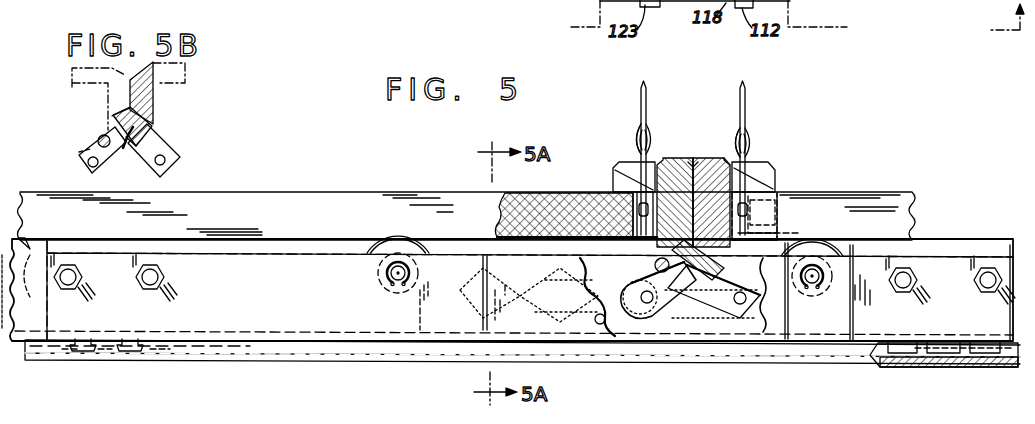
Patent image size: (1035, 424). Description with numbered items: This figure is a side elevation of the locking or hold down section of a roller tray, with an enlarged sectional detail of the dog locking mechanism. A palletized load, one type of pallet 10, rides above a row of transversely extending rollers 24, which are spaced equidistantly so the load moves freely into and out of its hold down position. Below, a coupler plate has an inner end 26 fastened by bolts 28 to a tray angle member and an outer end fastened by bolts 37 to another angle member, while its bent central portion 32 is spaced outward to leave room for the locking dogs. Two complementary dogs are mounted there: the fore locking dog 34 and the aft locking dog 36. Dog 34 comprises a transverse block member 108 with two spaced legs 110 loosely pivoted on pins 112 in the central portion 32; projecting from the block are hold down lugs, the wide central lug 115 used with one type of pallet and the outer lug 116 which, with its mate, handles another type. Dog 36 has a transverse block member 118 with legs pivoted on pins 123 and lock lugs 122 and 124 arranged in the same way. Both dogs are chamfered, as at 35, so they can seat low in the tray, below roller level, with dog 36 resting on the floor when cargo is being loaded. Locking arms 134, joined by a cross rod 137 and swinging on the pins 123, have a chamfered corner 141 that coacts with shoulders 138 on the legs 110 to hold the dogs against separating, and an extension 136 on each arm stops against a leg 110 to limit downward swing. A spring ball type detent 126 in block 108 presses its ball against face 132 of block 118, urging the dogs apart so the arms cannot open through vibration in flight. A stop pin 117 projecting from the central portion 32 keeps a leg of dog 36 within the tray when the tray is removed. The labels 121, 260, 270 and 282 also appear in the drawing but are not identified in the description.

In FIG. 5, the pallet 10 is at (303, 189).
In FIG. 5, the roller 24 is at (30, 244).
In FIG. 5, the inner end 26 is at (278, 322).
In FIG. 5, the bolt 28 is at (137, 281).
In FIG. 5, the central portion 32 is at (521, 262).
In FIG. 5, the locking dog 34 is at (668, 152).
In FIG. 5, the chamfer 35 is at (700, 163).
In FIG. 5, the locking dog 36 is at (729, 150).
In FIG. 5, the bolt 37 is at (915, 268).
In FIG. 5, the transverse block member 108 is at (622, 172).
In FIG. 5B, the leg 110 is at (164, 142).
In FIG. 5, the leg 110 is at (735, 311).
In FIG. 5B, the pin 112 is at (177, 157).
In FIG. 5, the pin 112 is at (745, 305).
In FIG. 5, the hold down lug 115 is at (635, 166).
In FIG. 5B, the hold down lug 116 is at (72, 84).
In FIG. 5, the stop pin 117 is at (600, 325).
In FIG. 5, the transverse block member 118 is at (746, 190).
In FIG. 5B, the base edge 121 is at (80, 149).
In FIG. 5, the base edge 121 is at (582, 247).
In FIG. 5, the lock lug 122 is at (760, 167).
In FIG. 5B, the pin 123 is at (80, 162).
In FIG. 5, the pin 123 is at (652, 304).
In FIG. 5B, the lock lug 124 is at (185, 68).
In FIG. 5, the spring ball type detent 126 is at (749, 222).
In FIG. 5, the face 132 is at (742, 233).
In FIG. 5B, the locking arm 134 is at (104, 136).
In FIG. 5, the locking arm 134 is at (652, 266).
In FIG. 5B, the extension 136 is at (116, 118).
In FIG. 5B, the cross rod 137 is at (98, 139).
In FIG. 5, the cross rod 137 is at (668, 275).
In FIG. 5B, the shoulder 138 is at (123, 149).
In FIG. 5, the shoulder 138 is at (722, 242).
In FIG. 5B, the chamfered corner 141 is at (127, 148).
In FIG. 5, the crosshatched base 260 is at (622, 197).
In FIG. 5, the pin 270 is at (649, 95).
In FIG. 5, the pin bulb 282 is at (640, 150).